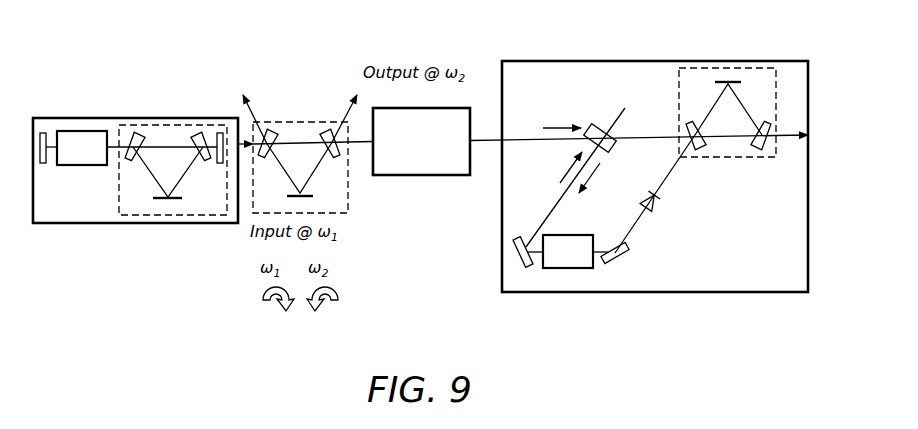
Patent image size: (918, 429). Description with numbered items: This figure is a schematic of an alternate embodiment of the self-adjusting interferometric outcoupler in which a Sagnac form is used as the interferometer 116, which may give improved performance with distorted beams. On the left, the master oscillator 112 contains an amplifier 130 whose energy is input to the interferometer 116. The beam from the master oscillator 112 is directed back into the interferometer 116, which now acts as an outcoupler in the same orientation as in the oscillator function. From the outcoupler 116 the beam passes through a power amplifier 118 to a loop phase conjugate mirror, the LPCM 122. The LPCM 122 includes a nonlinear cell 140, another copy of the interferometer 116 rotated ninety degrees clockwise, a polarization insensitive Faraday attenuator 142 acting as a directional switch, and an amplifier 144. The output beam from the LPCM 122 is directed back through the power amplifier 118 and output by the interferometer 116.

The master oscillator 112 is at (53, 118).
The interferometer 116 is at (155, 124).
The power amplifier 118 is at (418, 175).
The loop PCM (LPCM) 122 is at (612, 62).
The amplifier 130 is at (80, 165).
The nonlinear cell 140 is at (613, 133).
The polarization insensitive Faraday attenuator (PIFA) 142 is at (662, 208).
The amplifier 144 is at (567, 268).